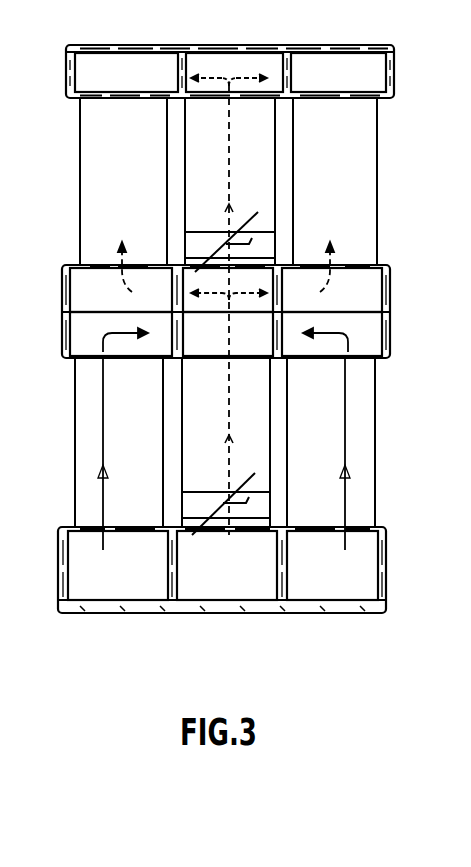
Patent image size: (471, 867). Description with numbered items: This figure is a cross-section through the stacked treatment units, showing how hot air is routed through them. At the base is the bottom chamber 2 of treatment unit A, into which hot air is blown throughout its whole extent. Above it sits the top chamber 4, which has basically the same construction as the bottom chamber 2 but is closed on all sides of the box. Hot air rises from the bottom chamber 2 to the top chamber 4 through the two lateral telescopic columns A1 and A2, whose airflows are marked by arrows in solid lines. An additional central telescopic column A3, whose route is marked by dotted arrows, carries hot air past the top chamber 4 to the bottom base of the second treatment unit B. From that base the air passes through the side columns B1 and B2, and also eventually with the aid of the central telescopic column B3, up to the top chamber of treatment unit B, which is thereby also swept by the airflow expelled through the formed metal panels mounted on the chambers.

The bottom chamber 2 is at (400, 563).
The top chamber 4 is at (400, 331).
The lateral telescopic column A1 is at (360, 477).
The lateral telescopic column A2 is at (73, 480).
The central telescopic column A3 is at (191, 412).
The side column B1 is at (370, 152).
The side column B2 is at (80, 171).
The telescopic column B3 is at (230, 185).